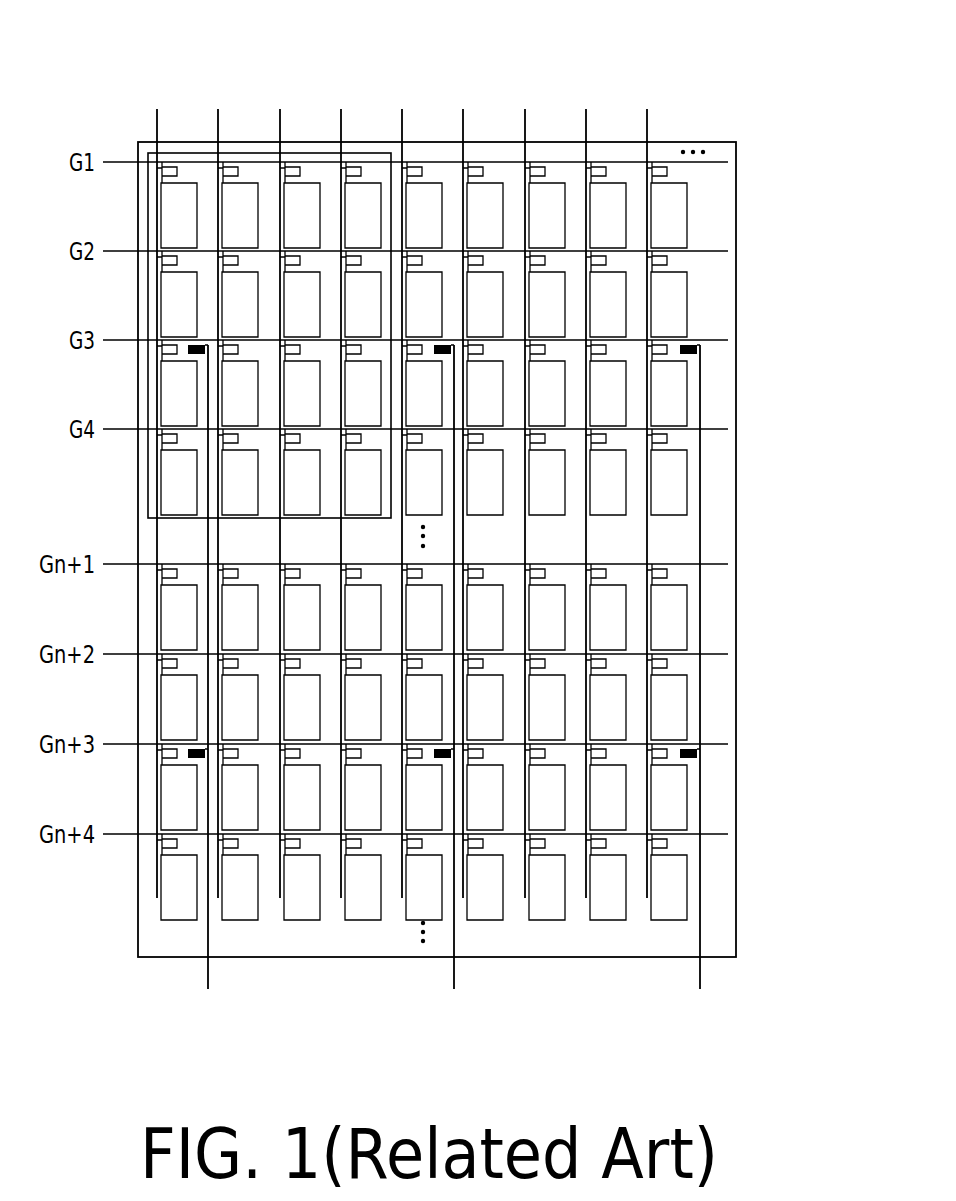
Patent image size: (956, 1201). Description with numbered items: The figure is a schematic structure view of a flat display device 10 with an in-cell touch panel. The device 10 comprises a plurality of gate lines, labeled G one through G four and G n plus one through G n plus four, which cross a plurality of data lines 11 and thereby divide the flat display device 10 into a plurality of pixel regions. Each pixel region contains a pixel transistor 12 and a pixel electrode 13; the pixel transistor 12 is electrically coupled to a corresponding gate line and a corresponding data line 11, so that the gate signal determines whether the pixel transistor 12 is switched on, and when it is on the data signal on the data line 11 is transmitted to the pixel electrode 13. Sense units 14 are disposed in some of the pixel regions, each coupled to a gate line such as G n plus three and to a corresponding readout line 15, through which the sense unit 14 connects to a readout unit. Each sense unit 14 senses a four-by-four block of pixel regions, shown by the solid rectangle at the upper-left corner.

The flat display device 10 is at (420, 40).
The data line 11 is at (647, 120).
The pixel transistor 12 is at (668, 168).
The pixel electrode 13 is at (673, 223).
The sense unit 14 is at (697, 349).
The readout line 15 is at (700, 933).